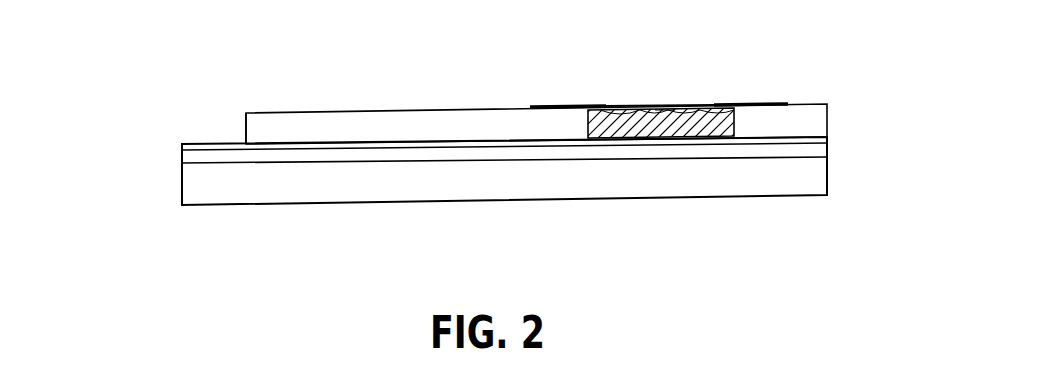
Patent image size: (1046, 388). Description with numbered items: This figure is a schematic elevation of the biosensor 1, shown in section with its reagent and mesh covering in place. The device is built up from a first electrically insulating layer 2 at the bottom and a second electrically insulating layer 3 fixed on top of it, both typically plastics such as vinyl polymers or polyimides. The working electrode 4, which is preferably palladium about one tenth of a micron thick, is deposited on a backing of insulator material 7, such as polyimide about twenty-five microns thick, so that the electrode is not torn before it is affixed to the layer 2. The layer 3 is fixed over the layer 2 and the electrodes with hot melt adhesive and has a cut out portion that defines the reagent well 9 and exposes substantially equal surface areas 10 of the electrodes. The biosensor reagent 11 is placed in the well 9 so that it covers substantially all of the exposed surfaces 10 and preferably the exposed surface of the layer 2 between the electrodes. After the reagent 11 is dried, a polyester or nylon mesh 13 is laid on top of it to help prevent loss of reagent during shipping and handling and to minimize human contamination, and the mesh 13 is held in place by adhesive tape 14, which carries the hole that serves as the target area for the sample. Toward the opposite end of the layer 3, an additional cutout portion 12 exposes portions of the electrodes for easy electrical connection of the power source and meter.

The biosensor 1 is at (850, 120).
The first electrically insulating layer 2 is at (182, 188).
The second electrically insulating layer 3 is at (338, 112).
The working electrode 4 is at (200, 144).
The backing of insulator material 7 is at (823, 154).
The reagent well 9 is at (713, 104).
The exposed surface areas of electrodes 10 is at (592, 108).
The biosensor reagent 11 is at (664, 107).
The additional cutout portion 12 is at (246, 122).
The mesh 13 is at (643, 107).
The adhesive tape 14 is at (540, 105).